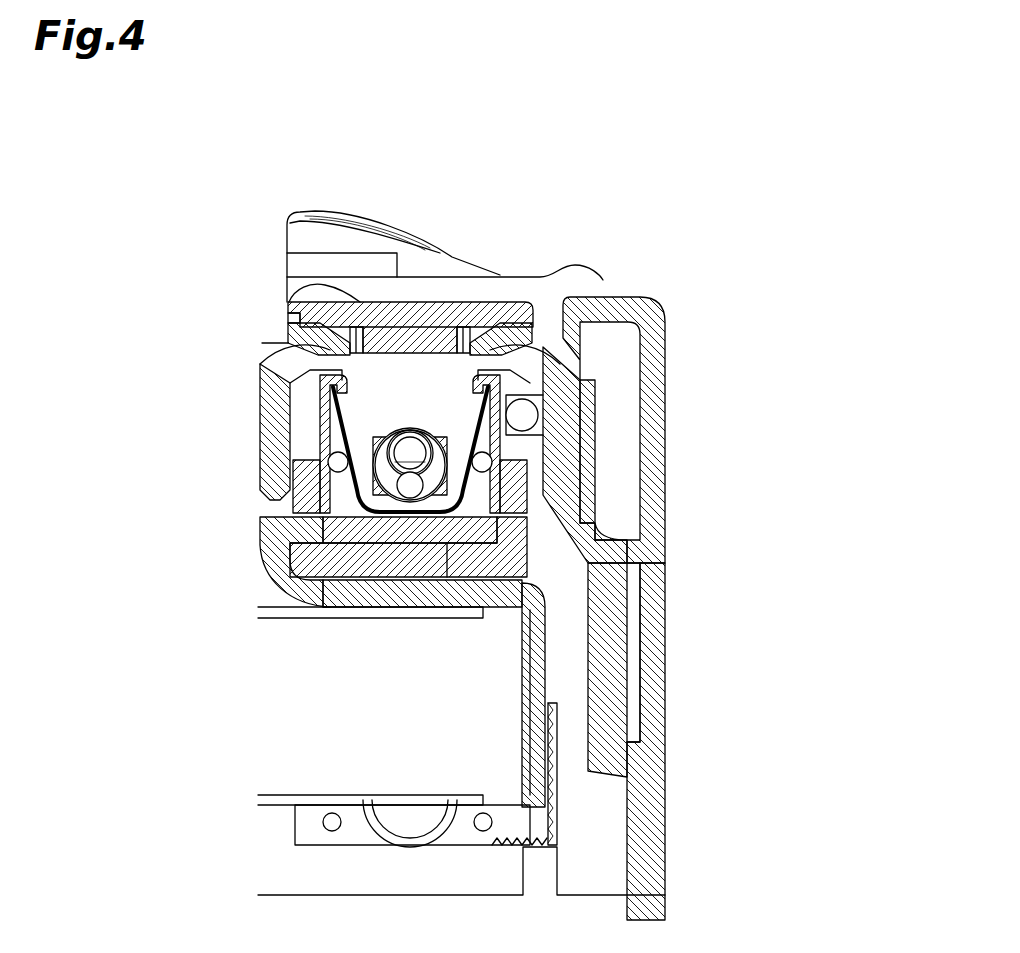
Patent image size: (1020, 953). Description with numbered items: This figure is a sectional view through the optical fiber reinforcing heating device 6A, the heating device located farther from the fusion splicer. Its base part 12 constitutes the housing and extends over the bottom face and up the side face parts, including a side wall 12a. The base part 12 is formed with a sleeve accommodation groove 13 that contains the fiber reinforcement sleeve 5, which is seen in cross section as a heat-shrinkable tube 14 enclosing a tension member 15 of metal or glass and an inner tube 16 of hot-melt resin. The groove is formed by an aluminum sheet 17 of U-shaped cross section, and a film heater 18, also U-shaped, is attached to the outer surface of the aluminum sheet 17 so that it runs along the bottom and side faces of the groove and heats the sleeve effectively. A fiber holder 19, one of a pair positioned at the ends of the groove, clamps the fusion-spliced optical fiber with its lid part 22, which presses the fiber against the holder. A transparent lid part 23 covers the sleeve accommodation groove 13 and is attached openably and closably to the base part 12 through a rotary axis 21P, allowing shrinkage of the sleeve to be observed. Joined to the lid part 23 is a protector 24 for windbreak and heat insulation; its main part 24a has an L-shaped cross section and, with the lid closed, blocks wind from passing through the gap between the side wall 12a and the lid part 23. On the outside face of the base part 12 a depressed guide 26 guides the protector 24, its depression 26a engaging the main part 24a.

The fiber reinforcement sleeve 5 is at (408, 428).
The optical fiber reinforcing heating device 6A is at (650, 203).
The base part 12 is at (643, 810).
The side wall 12a is at (563, 461).
The sleeve accommodation groove 13 is at (430, 428).
The heat-shrinkable tube 14 is at (392, 440).
The tension member 15 is at (410, 505).
The inner tube 16 is at (377, 510).
The aluminum sheet 17 is at (465, 400).
The film heater 18 is at (468, 500).
The fiber holder 19 is at (316, 205).
The rotary axis 21P is at (522, 415).
The lid part 22 is at (393, 290).
The lid part 23 is at (305, 307).
The protector 24 is at (684, 430).
The main part 24a is at (655, 360).
The depressed guide 26 is at (692, 670).
The depression 26a is at (628, 637).